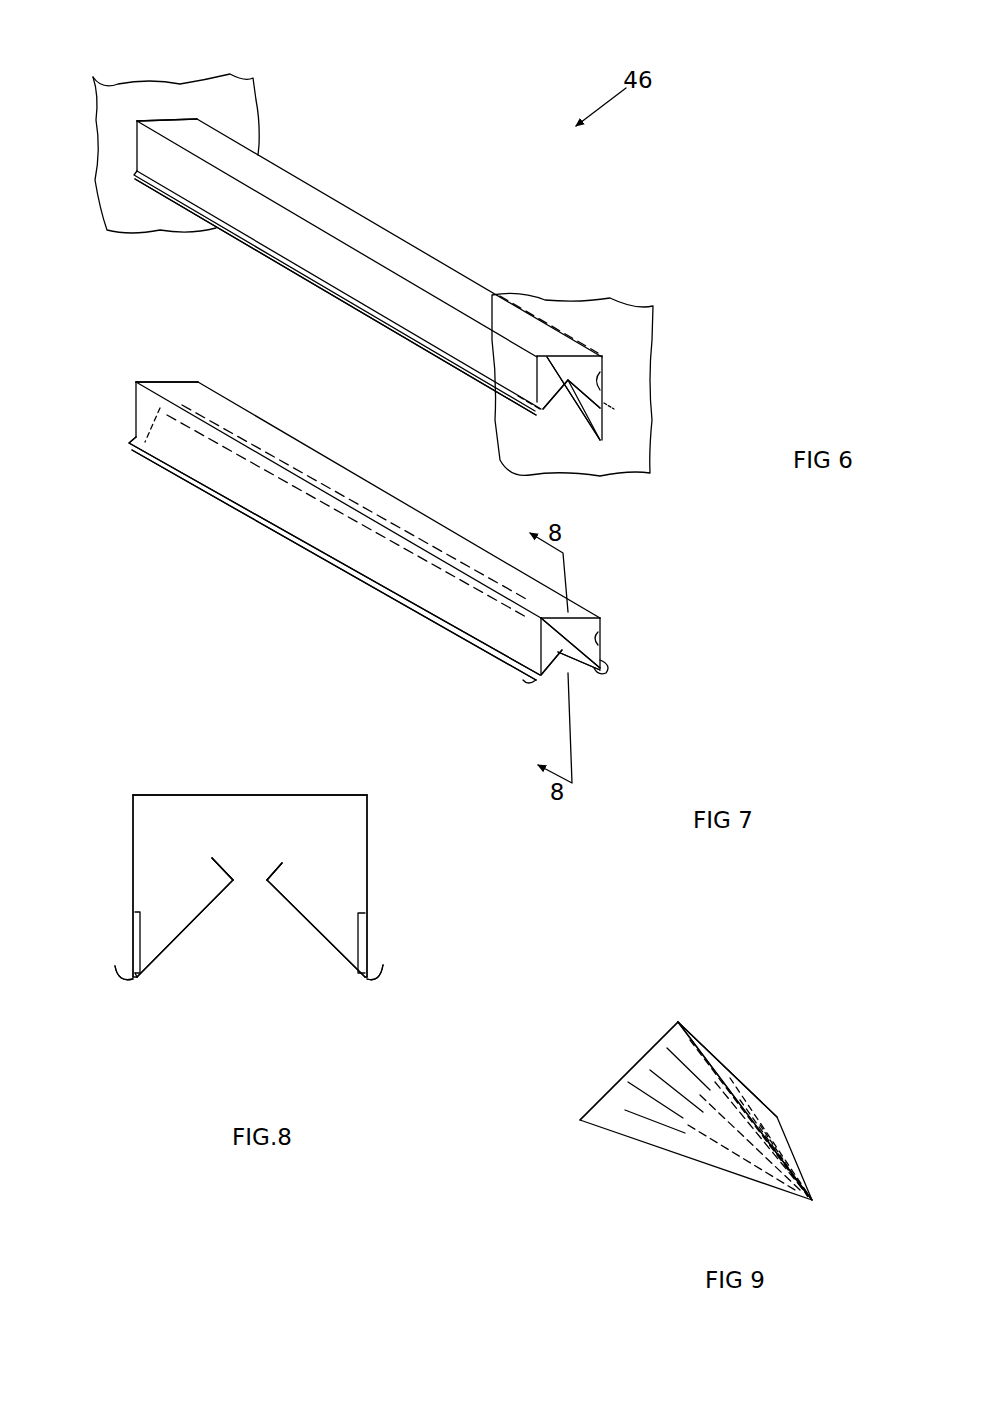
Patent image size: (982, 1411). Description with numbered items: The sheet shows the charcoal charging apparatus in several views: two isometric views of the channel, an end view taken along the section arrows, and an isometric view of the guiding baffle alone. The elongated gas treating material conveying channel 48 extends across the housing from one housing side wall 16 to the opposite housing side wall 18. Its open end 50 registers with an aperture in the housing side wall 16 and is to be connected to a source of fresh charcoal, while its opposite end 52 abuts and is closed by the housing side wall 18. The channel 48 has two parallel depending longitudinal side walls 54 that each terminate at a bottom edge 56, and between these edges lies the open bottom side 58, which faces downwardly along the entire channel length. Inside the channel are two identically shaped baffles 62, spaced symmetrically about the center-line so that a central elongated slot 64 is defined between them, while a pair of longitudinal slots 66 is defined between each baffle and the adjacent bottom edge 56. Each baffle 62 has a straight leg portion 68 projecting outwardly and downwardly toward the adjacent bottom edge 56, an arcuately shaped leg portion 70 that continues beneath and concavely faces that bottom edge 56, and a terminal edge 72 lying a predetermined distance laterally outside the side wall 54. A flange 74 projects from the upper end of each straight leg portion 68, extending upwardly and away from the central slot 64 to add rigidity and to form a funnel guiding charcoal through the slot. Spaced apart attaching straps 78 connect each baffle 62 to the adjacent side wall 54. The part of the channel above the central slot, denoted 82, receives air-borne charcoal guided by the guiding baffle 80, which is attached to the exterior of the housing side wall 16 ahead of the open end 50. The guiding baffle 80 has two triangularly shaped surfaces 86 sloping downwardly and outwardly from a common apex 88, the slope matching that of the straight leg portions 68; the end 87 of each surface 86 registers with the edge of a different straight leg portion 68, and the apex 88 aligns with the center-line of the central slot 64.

In FIG. 6, the housing side wall 16 is at (640, 427).
In FIG. 6, the housing side wall 18 is at (150, 90).
In FIG. 6, the gas treating material conveying channel 48 is at (385, 245).
In FIG. 7, the gas treating material conveying channel 48 is at (247, 432).
In FIG. 8, the gas treating material conveying channel 48 is at (263, 800).
In FIG. 6, the open end 50 is at (602, 388).
In FIG. 7, the open end 50 is at (597, 638).
In FIG. 6, the opposite end 52 is at (188, 113).
In FIG. 7, the opposite end 52 is at (137, 387).
In FIG. 6, the depending longitudinal side wall 54 is at (453, 327).
In FIG. 7, the depending longitudinal side wall 54 is at (465, 603).
In FIG. 8, the depending longitudinal side wall 54 is at (133, 828).
In FIG. 6, the bottom edge 56 is at (462, 365).
In FIG. 7, the bottom edge 56 is at (360, 565).
In FIG. 8, the bottom edge 56 is at (130, 953).
In FIG. 7, the open bottom side 58 is at (537, 688).
In FIG. 8, the open bottom side 58 is at (268, 989).
In FIG. 7, the baffle 62 is at (551, 676).
In FIG. 8, the baffle 62 is at (178, 953).
In FIG. 8, the elongated slot 64 is at (240, 895).
In FIG. 6, the longitudinal slot 66 is at (336, 280).
In FIG. 7, the longitudinal slot 66 is at (331, 552).
In FIG. 8, the longitudinal slot 66 is at (122, 957).
In FIG. 6, the straight leg portion 68 is at (550, 383).
In FIG. 7, the straight leg portion 68 is at (550, 653).
In FIG. 8, the straight leg portion 68 is at (207, 913).
In FIG. 7, the arcuately shaped leg portion 70 is at (532, 683).
In FIG. 8, the arcuately shaped leg portion 70 is at (135, 980).
In FIG. 7, the terminal edge 72 is at (283, 530).
In FIG. 8, the terminal edge 72 is at (115, 967).
In FIG. 6, the flange 74 is at (562, 380).
In FIG. 7, the flange 74 is at (557, 648).
In FIG. 8, the flange 74 is at (232, 880).
In FIG. 8, the attaching strap 78 is at (135, 925).
In FIG. 6, the guiding baffle 80 is at (585, 420).
In FIG. 9, the guiding baffle 80 is at (813, 1090).
In FIG. 8, the part of the channel above the central slot 82 is at (214, 833).
In FIG. 9, the triangularly shaped surface 86 is at (773, 1128).
In FIG. 6, the end of surface 87 is at (555, 393).
In FIG. 9, the end of surface 87 is at (640, 1060).
In FIG. 9, the apex 88 is at (747, 1108).